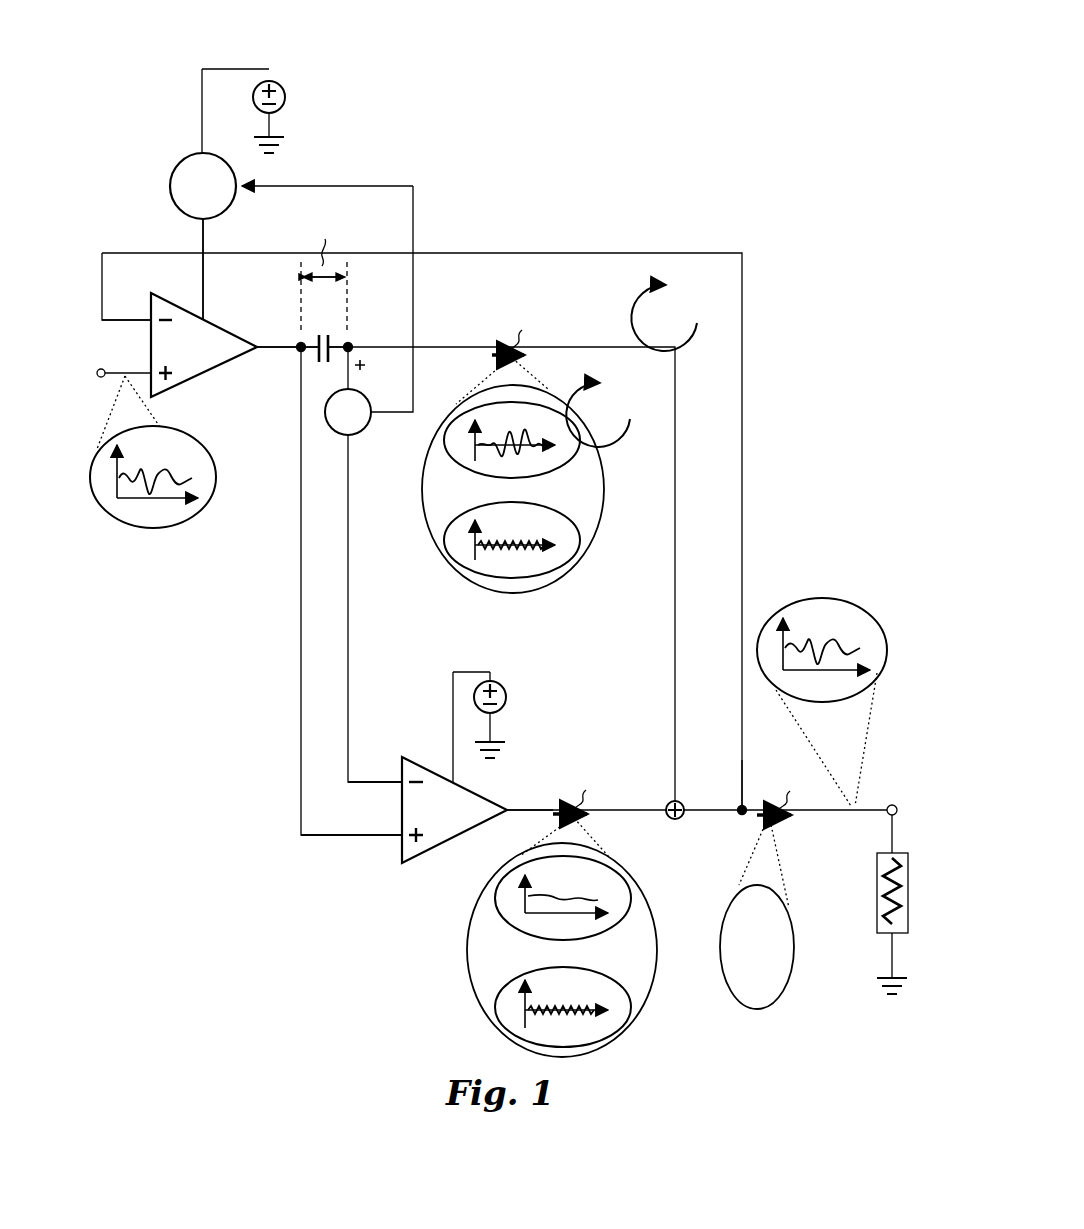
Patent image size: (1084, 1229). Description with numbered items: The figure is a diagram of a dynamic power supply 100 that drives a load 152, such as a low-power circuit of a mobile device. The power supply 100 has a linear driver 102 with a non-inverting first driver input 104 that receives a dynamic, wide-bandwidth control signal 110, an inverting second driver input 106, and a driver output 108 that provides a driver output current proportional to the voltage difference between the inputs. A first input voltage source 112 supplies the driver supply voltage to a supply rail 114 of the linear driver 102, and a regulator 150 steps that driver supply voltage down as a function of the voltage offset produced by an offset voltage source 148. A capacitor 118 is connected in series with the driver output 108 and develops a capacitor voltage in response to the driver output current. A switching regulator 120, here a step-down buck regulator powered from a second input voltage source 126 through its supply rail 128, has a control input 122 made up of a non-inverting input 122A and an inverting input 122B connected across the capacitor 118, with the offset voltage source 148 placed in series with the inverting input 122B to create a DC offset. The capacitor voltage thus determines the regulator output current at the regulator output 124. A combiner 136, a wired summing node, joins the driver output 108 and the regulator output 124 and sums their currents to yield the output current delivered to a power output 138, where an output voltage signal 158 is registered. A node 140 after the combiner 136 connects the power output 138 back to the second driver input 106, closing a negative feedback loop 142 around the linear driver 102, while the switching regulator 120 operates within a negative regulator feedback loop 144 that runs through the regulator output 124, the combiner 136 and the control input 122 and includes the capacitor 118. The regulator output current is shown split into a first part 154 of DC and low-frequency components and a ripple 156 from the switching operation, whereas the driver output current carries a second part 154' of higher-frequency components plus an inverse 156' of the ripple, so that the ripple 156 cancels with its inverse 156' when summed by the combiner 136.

The dynamic power supply 100 is at (596, 80).
The linear driver 102 is at (204, 345).
The first driver input 104 is at (107, 364).
The second driver input 106 is at (126, 319).
The driver output 108 is at (268, 350).
The control signal 110 is at (153, 528).
The first input voltage source 112 is at (286, 98).
The supply rail 114 is at (206, 300).
The capacitor 118 is at (337, 333).
The switching regulator 120 is at (454, 810).
The control input 122 is at (332, 858).
The non-inverting input 122A is at (390, 838).
The inverting input 122B is at (372, 780).
The regulator output 124 is at (517, 807).
The second input voltage source 126 is at (507, 700).
The supply rail 128 is at (452, 700).
The combiner 136 is at (678, 821).
The power output 138 is at (883, 821).
The node 140 is at (739, 806).
The negative feedback loop 142 is at (697, 323).
The negative regulator feedback loop 144 is at (630, 419).
The offset voltage source 148 is at (357, 432).
The regulator 150 is at (170, 181).
The load 152 is at (878, 893).
The first part 154 is at (534, 908).
The second part 154' is at (551, 445).
The ripple 156 is at (528, 1007).
The inverse of ripple 156' is at (552, 548).
The output voltage signal 158 is at (797, 600).